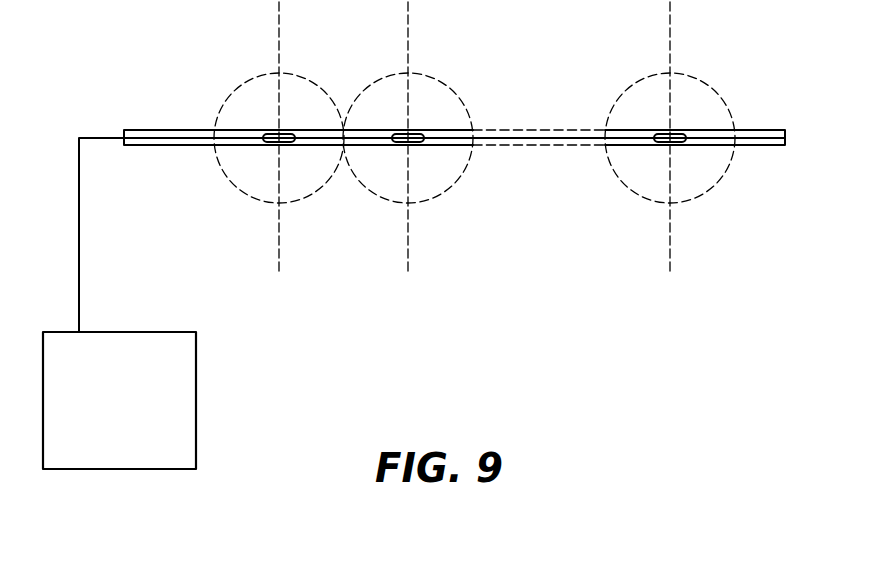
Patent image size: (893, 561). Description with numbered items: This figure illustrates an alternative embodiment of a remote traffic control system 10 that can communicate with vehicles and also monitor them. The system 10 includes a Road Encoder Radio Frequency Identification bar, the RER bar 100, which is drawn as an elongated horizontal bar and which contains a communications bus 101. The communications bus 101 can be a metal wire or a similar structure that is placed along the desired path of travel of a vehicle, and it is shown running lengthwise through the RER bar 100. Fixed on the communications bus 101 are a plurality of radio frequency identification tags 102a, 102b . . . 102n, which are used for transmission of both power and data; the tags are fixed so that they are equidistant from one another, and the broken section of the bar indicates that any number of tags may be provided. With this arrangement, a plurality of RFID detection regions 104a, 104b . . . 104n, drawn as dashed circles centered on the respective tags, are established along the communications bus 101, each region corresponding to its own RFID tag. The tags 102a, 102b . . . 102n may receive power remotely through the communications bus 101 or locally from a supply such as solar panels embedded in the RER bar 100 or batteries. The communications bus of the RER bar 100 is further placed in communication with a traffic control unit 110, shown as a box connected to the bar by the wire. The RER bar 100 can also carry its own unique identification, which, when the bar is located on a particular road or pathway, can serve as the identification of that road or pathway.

The remote traffic control system 10 is at (414, 235).
The Road Encoder Radio Frequency Identification (RER) bar 100 is at (567, 146).
The communications bus 101 is at (98, 137).
The radio frequency identification (RFID) tag 102a is at (284, 131).
The radio frequency identification (RFID) tag 102b is at (414, 131).
The radio frequency identification (RFID) tag 102n is at (675, 131).
The RFID detection region 104a is at (247, 175).
The RFID detection region 104b is at (377, 175).
The RFID detection region 104n is at (638, 175).
The traffic control unit 110 is at (196, 385).